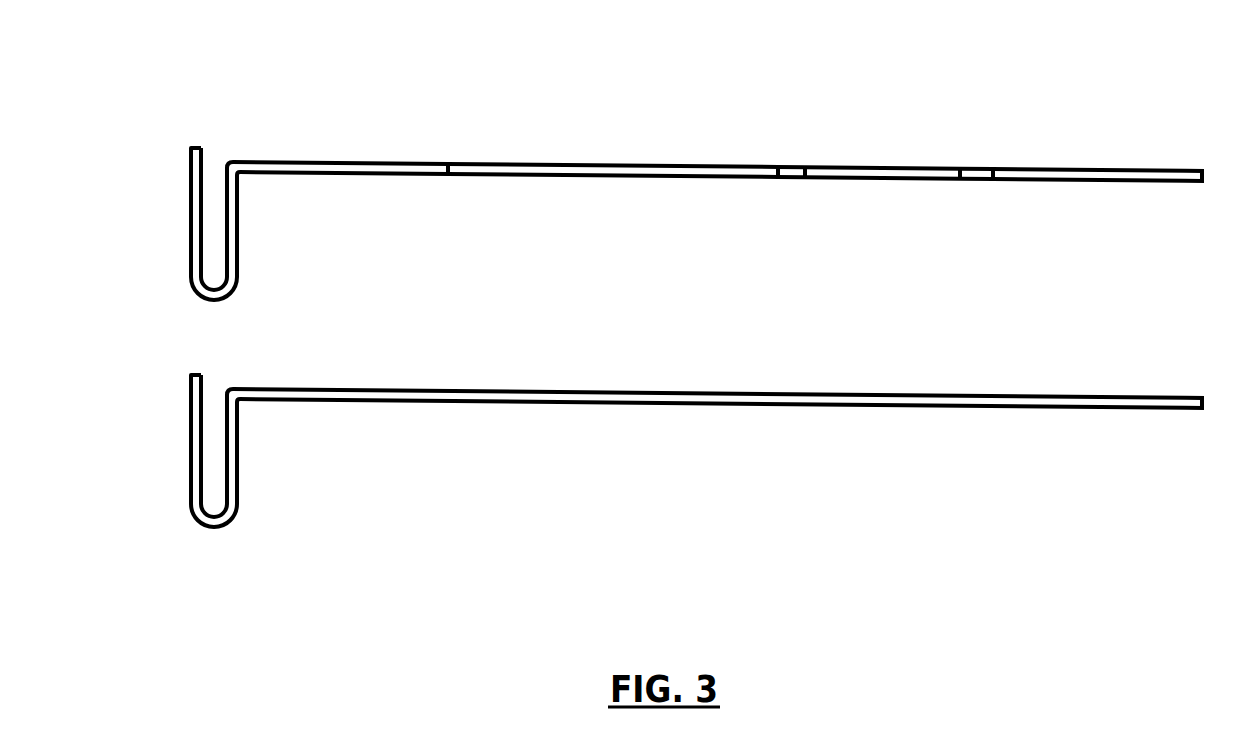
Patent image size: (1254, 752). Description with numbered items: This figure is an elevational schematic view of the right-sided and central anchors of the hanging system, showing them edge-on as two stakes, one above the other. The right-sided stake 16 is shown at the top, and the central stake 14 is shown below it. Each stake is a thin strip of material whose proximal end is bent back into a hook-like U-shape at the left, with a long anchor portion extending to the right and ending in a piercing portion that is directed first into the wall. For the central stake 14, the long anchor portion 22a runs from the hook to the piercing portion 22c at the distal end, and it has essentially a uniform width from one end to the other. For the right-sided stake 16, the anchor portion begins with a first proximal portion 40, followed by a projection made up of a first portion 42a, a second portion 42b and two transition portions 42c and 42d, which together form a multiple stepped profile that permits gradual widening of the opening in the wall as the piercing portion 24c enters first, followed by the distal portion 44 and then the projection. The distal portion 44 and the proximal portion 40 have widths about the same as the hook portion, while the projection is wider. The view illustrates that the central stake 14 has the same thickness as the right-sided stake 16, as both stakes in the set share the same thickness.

The central stake 14 is at (186, 442).
The right-sided stake 16 is at (186, 212).
The anchor portion 22a is at (619, 391).
The piercing portion 22c is at (1187, 400).
The piercing portion 24c is at (1193, 168).
The first proximal portion 40 is at (347, 165).
The first portion 42a is at (654, 165).
The second portion 42b is at (862, 166).
The transition portion 42c is at (785, 165).
The transition portion 42d is at (972, 169).
The distal portion 44 is at (1108, 171).